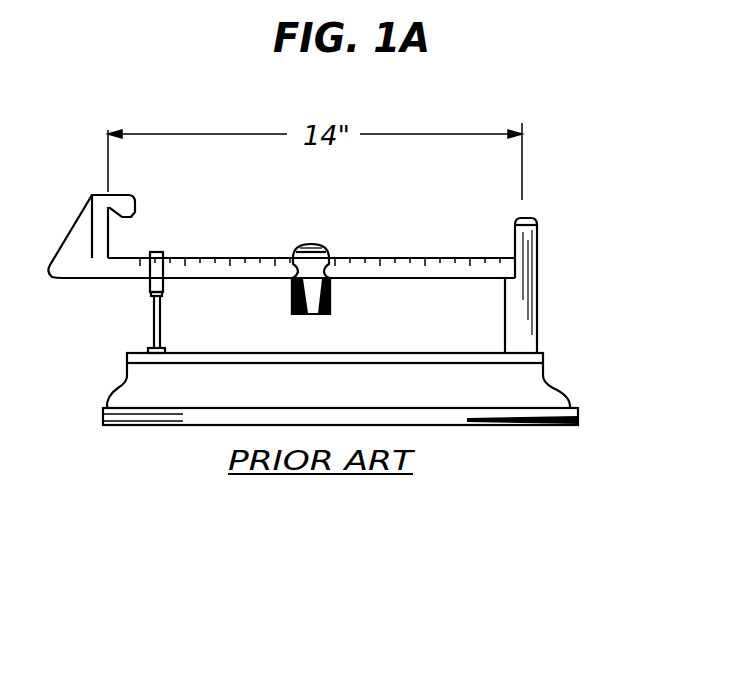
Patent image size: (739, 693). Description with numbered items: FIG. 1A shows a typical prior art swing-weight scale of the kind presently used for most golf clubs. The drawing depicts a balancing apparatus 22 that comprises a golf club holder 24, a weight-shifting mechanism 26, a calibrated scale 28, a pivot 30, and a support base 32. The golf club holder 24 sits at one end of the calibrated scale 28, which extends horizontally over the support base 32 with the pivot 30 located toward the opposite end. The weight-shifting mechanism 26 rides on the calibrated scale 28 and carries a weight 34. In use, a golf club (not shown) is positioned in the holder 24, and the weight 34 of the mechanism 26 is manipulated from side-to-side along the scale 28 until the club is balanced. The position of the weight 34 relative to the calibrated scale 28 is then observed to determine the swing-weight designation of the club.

The balancing apparatus 22 is at (505, 427).
The golf club holder 24 is at (112, 236).
The weight-shifting mechanism 26 is at (330, 243).
The calibrated scale 28 is at (288, 294).
The pivot 30 is at (559, 268).
The support base 32 is at (375, 379).
The weight 34 is at (286, 233).